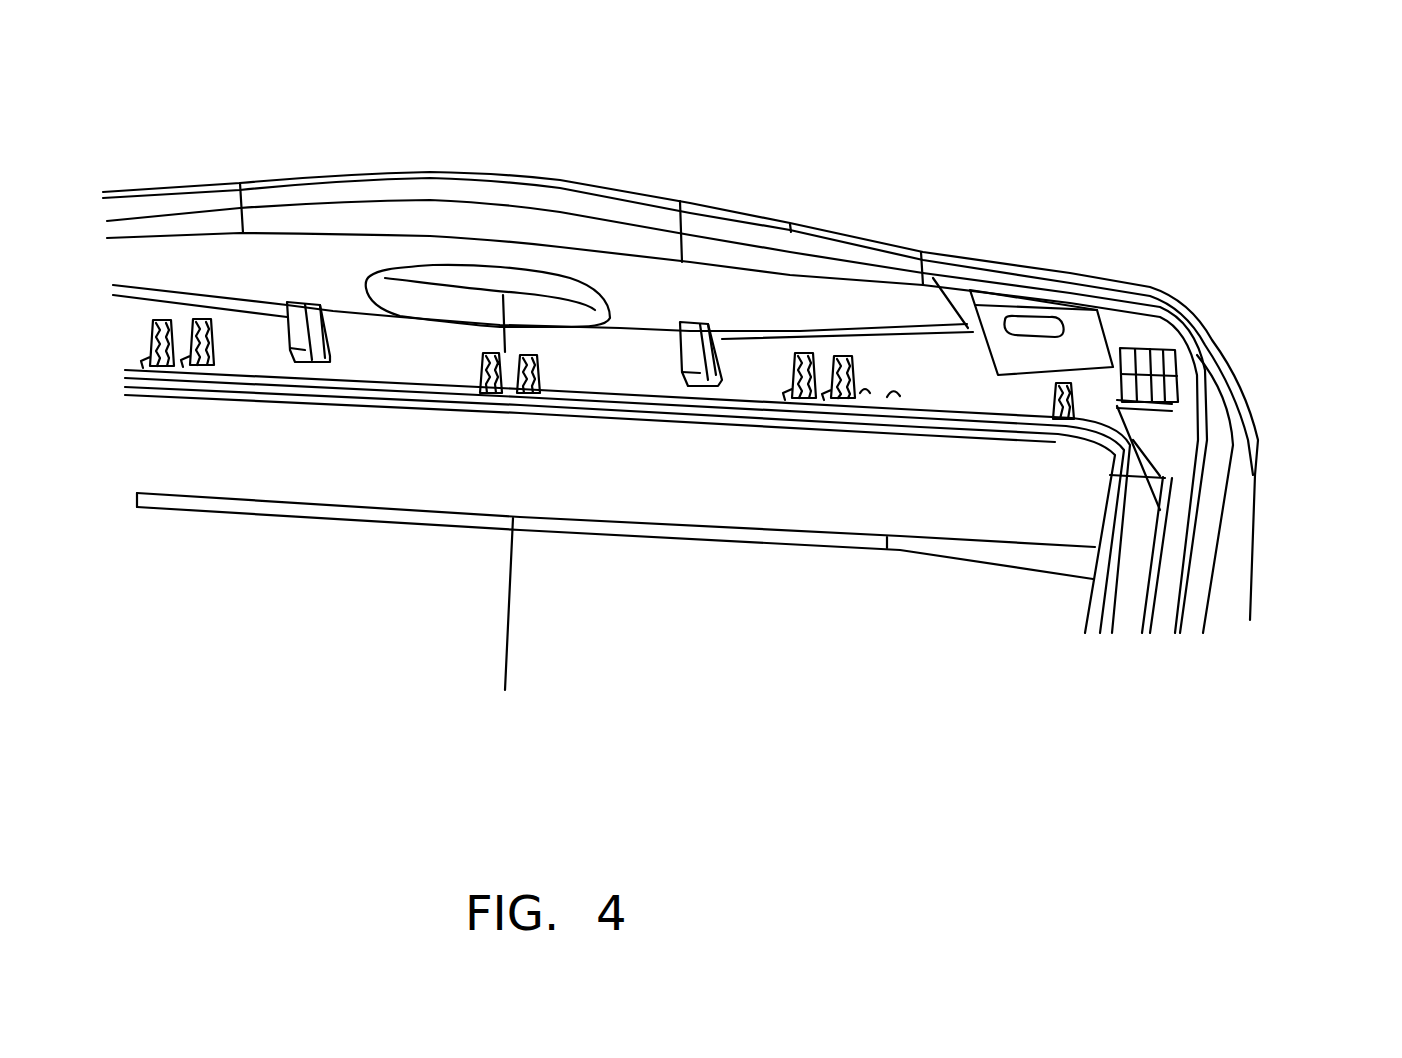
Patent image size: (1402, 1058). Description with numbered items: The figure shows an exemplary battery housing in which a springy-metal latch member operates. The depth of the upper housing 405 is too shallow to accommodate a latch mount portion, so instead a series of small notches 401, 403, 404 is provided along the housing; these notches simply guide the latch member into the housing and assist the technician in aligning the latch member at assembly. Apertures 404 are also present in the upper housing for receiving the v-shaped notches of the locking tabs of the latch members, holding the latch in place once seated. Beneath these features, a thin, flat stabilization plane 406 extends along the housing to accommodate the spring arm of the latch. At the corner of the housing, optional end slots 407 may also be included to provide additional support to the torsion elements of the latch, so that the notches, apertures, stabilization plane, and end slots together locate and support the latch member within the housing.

The notches 401 is at (305, 303).
The notches 403 is at (513, 403).
The apertures 404 is at (1043, 317).
The upper housing 405 is at (1220, 356).
The stabilization plane 406 is at (967, 433).
The end slots 407 is at (1147, 397).